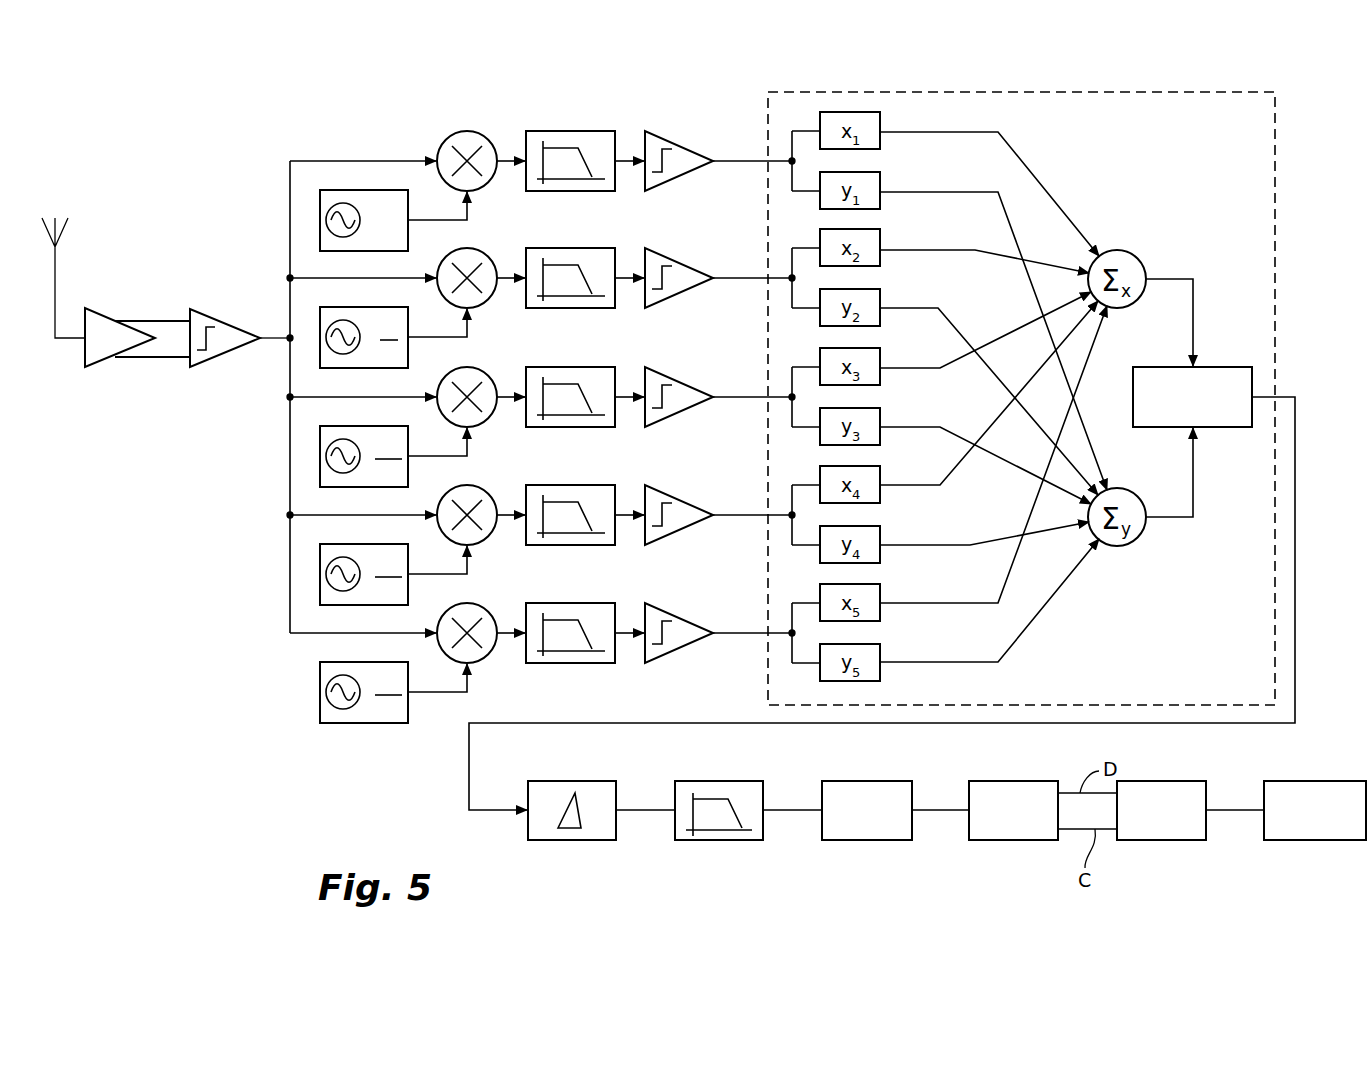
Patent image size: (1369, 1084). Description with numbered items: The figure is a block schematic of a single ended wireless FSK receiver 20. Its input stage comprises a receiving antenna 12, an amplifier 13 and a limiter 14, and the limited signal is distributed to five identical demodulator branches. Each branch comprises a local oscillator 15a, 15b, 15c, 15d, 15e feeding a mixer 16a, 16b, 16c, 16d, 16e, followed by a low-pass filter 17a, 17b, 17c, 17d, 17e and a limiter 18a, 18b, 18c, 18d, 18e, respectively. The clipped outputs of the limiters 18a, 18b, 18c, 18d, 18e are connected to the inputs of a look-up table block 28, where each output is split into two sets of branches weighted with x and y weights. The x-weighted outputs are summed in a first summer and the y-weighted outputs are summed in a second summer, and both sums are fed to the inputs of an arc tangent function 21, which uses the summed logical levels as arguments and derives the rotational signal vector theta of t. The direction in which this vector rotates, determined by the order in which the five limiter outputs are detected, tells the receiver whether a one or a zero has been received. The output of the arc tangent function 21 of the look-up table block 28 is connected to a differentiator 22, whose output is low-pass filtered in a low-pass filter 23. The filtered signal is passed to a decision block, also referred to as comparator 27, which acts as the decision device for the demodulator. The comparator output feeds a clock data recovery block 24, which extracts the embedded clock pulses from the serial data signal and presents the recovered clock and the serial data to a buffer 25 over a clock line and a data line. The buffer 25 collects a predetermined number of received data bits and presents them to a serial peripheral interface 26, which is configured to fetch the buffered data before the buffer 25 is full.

The receiving antenna 12 is at (72, 232).
The amplifier 13 is at (100, 360).
The limiter 14 is at (217, 316).
The local oscillator 15a is at (374, 190).
The local oscillator 15b is at (393, 326).
The local oscillator 15c is at (393, 445).
The local oscillator 15d is at (393, 563).
The local oscillator 15e is at (393, 681).
The mixer 16a is at (472, 131).
The mixer 16b is at (483, 262).
The mixer 16c is at (482, 381).
The mixer 16d is at (483, 499).
The mixer 16e is at (483, 617).
The low-pass filter 17a is at (582, 131).
The low-pass filter 17b is at (570, 253).
The low-pass filter 17c is at (570, 372).
The low-pass filter 17d is at (570, 490).
The low-pass filter 17e is at (570, 608).
The limiter 18a is at (660, 137).
The limiter 18b is at (697, 265).
The limiter 18c is at (696, 384).
The limiter 18d is at (697, 502).
The limiter 18e is at (697, 620).
The wireless FSK receiver 20 is at (322, 778).
The Arc tan 2-function 21 is at (1222, 367).
The differentiator 22 is at (582, 840).
The low-pass filter 23 is at (723, 840).
The clock data recovery block 24 is at (1013, 840).
The buffer 25 is at (1160, 840).
The serial peripheral interface 26 is at (1325, 840).
The comparator 27 is at (866, 840).
The look-up table block 28 is at (1270, 195).